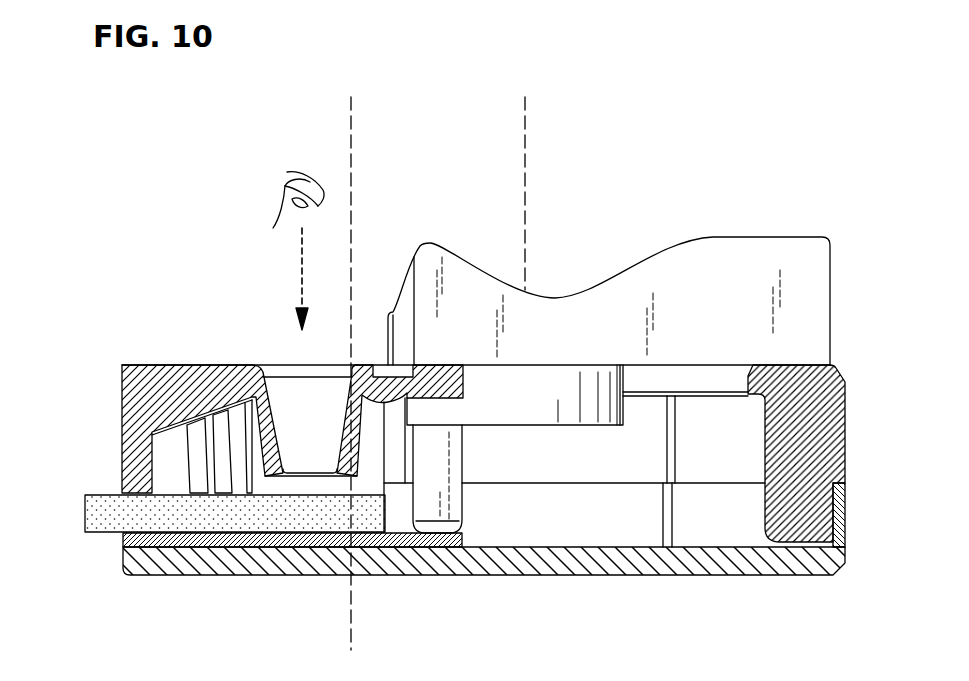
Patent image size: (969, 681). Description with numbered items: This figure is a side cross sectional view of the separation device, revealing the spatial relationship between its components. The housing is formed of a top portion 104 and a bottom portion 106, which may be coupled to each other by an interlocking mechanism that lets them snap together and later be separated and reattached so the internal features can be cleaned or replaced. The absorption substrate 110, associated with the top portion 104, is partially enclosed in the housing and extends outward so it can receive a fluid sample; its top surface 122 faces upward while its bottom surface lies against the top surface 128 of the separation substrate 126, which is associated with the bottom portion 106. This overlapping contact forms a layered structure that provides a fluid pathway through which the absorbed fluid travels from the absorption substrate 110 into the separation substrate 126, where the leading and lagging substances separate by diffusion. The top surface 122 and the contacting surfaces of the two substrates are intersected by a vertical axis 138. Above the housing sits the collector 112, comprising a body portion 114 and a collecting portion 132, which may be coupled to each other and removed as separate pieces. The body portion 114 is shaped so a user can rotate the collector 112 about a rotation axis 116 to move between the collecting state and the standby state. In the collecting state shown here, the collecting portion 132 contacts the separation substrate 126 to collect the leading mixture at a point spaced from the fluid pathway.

The top portion 104 is at (845, 412).
The bottom portion 106 is at (838, 533).
The absorption substrate 110 is at (85, 512).
The collector 112 is at (786, 237).
The body portion 114 is at (806, 253).
The rotation axis 116 is at (525, 122).
The top surface 122 is at (106, 493).
The separation substrate 126 is at (127, 545).
The top surface 128 is at (122, 525).
The collecting portion 132 is at (455, 504).
The vertical axis 138 is at (351, 127).